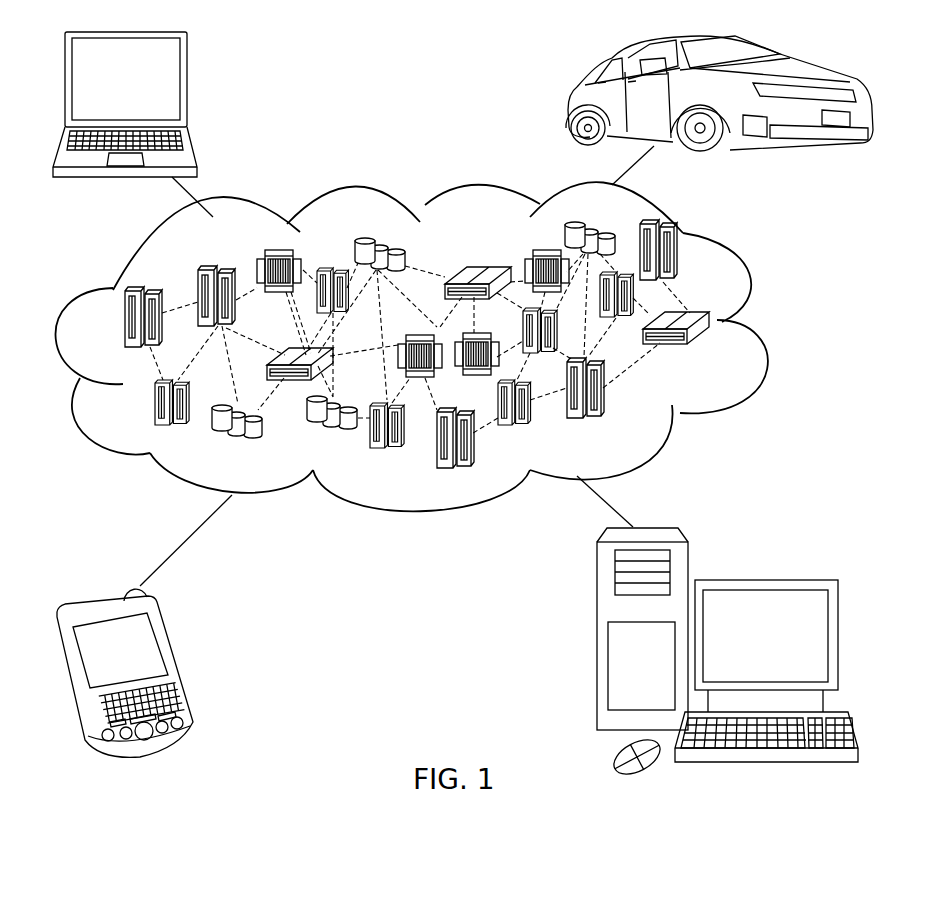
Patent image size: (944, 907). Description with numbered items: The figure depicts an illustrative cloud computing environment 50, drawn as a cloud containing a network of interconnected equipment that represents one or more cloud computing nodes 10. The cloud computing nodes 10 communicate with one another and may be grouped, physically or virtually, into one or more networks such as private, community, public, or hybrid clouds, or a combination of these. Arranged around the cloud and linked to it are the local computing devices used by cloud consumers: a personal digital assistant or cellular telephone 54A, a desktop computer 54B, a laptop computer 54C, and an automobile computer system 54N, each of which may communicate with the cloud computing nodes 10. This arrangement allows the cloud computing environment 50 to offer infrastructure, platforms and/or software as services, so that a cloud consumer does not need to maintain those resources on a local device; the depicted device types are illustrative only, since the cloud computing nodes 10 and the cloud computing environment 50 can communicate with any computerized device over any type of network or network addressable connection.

The cloud computing nodes 10 is at (437, 346).
The cloud computing environment 50 is at (763, 325).
The personal digital assistant or cellular telephone 54A is at (188, 662).
The desktop computer 54B is at (764, 579).
The laptop computer 54C is at (187, 85).
The automobile computer system 54N is at (574, 100).